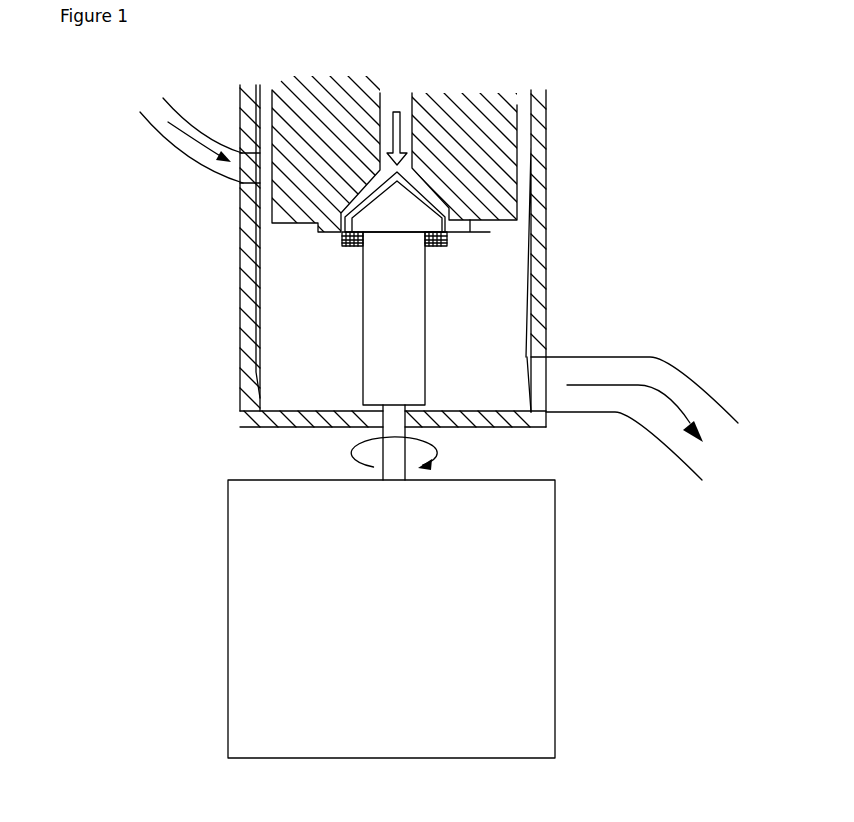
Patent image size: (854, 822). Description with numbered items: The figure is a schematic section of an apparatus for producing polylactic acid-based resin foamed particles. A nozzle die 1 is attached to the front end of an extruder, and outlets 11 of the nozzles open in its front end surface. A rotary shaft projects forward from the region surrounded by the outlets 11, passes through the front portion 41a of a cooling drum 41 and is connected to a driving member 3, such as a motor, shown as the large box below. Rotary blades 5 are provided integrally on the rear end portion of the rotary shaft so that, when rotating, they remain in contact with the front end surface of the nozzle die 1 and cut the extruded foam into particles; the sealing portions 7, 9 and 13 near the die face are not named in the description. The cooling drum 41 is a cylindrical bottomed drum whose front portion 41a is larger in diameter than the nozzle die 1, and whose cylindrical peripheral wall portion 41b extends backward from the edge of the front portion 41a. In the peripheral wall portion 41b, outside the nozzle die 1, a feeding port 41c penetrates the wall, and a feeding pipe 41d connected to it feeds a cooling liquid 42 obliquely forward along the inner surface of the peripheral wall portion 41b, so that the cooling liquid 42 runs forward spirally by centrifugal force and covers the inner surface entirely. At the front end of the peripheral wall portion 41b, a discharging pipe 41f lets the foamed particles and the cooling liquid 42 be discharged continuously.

The nozzle die 1 is at (419, 278).
The driving member 3 is at (546, 547).
The rotary blade 5 is at (340, 233).
The die block 7 is at (272, 215).
The rod 9 is at (410, 317).
The outlet 11 is at (465, 225).
The valve head contour 13 is at (450, 230).
The cooling drum 41 is at (260, 333).
The front portion 41a is at (285, 411).
The peripheral wall portion 41b is at (540, 288).
The feeding port 41c is at (243, 178).
The feeding pipe 41d is at (153, 122).
The discharging pipe 41f is at (660, 360).
The cooling liquid 42 is at (260, 302).